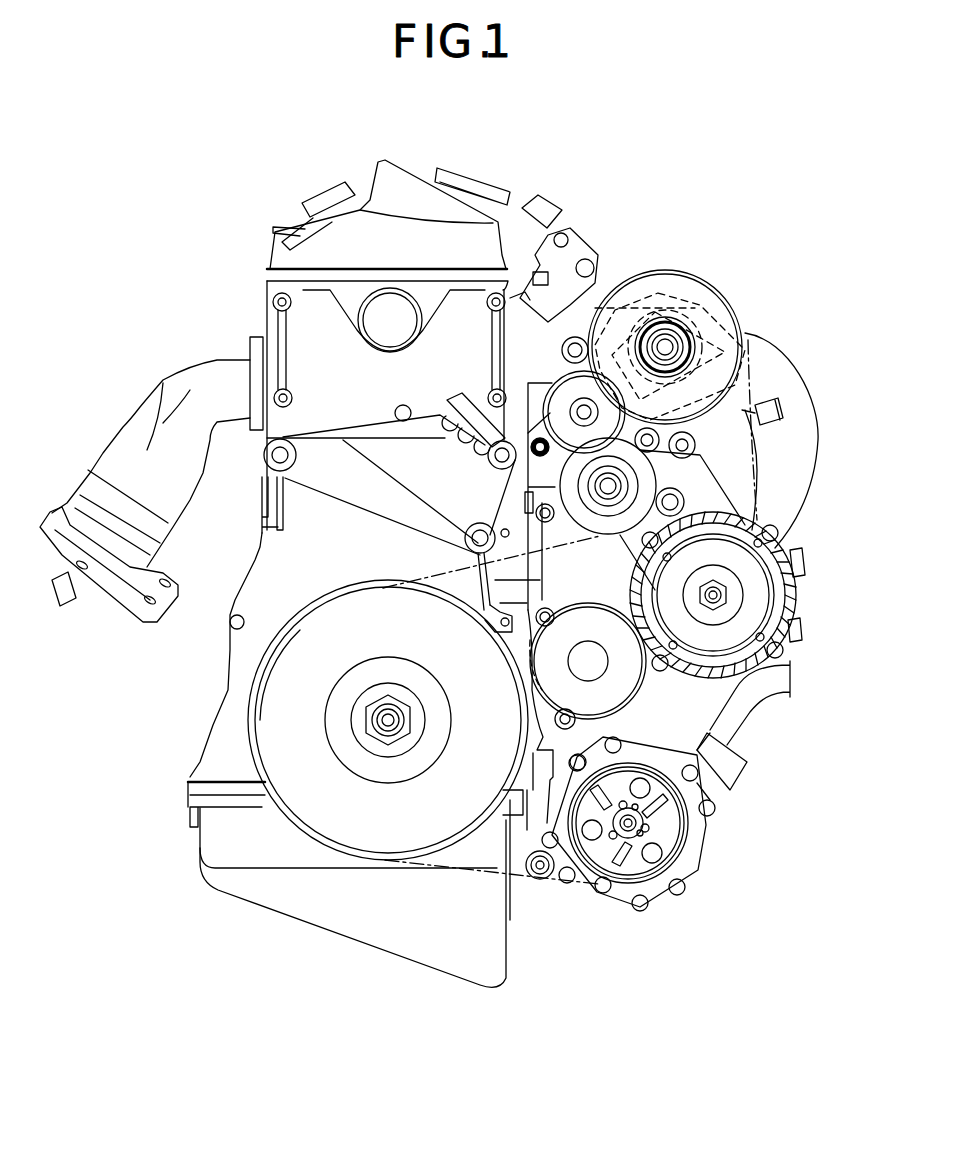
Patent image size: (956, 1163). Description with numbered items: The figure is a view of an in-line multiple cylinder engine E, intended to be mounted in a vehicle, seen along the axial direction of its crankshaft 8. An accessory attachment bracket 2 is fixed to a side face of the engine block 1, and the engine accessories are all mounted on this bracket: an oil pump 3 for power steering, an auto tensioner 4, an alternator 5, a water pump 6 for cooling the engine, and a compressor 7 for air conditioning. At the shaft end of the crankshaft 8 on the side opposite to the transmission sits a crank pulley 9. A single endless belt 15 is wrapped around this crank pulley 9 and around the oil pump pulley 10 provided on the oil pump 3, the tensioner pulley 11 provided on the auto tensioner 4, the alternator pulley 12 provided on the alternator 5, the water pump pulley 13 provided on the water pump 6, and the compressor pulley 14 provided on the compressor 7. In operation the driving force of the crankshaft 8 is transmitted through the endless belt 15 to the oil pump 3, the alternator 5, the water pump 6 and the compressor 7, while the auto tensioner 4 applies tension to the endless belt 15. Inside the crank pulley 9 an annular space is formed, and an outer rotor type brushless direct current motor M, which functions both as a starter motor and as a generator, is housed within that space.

The engine block 1 is at (262, 508).
The accessory attachment bracket 2 is at (681, 475).
The oil pump 3 is at (690, 302).
The auto tensioner 4 is at (555, 375).
The alternator 5 is at (753, 513).
The water pump 6 is at (582, 642).
The compressor 7 is at (577, 895).
The crankshaft 8 is at (380, 720).
The crank pulley 9 is at (452, 803).
The oil pump pulley 10 is at (682, 287).
The tensioner pulley 11 is at (528, 490).
The alternator pulley 12 is at (748, 603).
The water pump pulley 13 is at (565, 708).
The compressor pulley 14 is at (673, 847).
The endless belt 15 is at (452, 553).
The engine E is at (192, 303).
The brushless direct current motor M is at (241, 739).